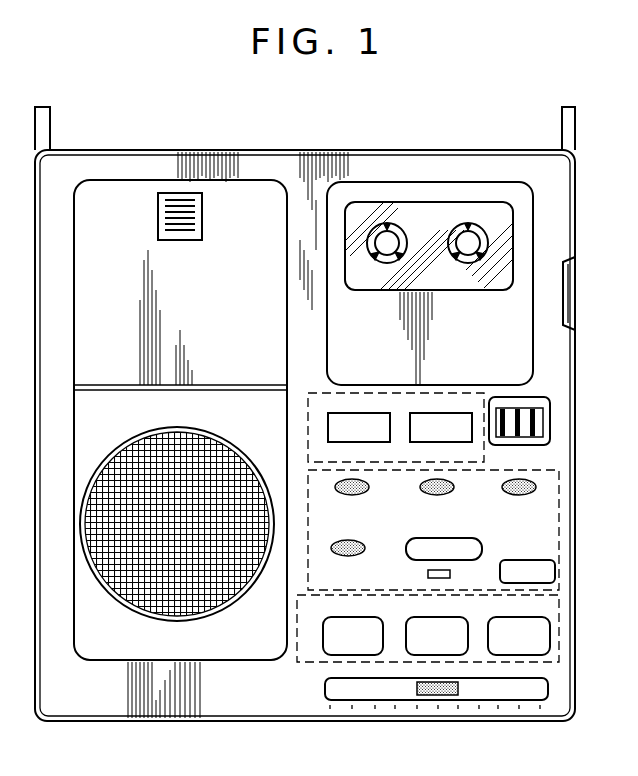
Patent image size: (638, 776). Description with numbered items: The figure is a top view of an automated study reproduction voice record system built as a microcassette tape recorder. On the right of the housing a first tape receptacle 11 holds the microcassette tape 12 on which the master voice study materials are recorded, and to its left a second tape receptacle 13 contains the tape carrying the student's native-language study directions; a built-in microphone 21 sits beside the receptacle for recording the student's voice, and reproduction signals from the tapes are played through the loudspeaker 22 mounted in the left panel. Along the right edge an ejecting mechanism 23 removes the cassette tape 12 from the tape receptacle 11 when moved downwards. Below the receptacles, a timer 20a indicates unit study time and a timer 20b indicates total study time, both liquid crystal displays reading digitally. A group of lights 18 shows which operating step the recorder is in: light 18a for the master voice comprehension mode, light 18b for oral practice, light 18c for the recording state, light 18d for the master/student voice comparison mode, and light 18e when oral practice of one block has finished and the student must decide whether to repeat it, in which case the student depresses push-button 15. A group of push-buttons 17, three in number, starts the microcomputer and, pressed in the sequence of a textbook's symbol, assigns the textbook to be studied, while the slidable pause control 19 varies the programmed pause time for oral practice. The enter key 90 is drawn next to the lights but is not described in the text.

The first tape receptacle 11 is at (507, 182).
The microcassette tape 12 is at (427, 207).
The second tape receptacle 13 is at (74, 240).
The push-button 15 is at (451, 574).
The group of push-buttons 17 is at (560, 645).
The group of lights 18 is at (423, 502).
The light 18a is at (336, 487).
The light 18b is at (423, 494).
The light 18c is at (537, 487).
The light 18d is at (366, 548).
The light 18e is at (483, 546).
The slidable pause control 19 is at (433, 699).
The timer 20a is at (397, 420).
The timer 20b is at (477, 420).
The built-in microphone 21 is at (543, 398).
The loudspeaker 22 is at (107, 596).
The ejecting mechanism 23 is at (577, 272).
The enter button 90 is at (535, 562).